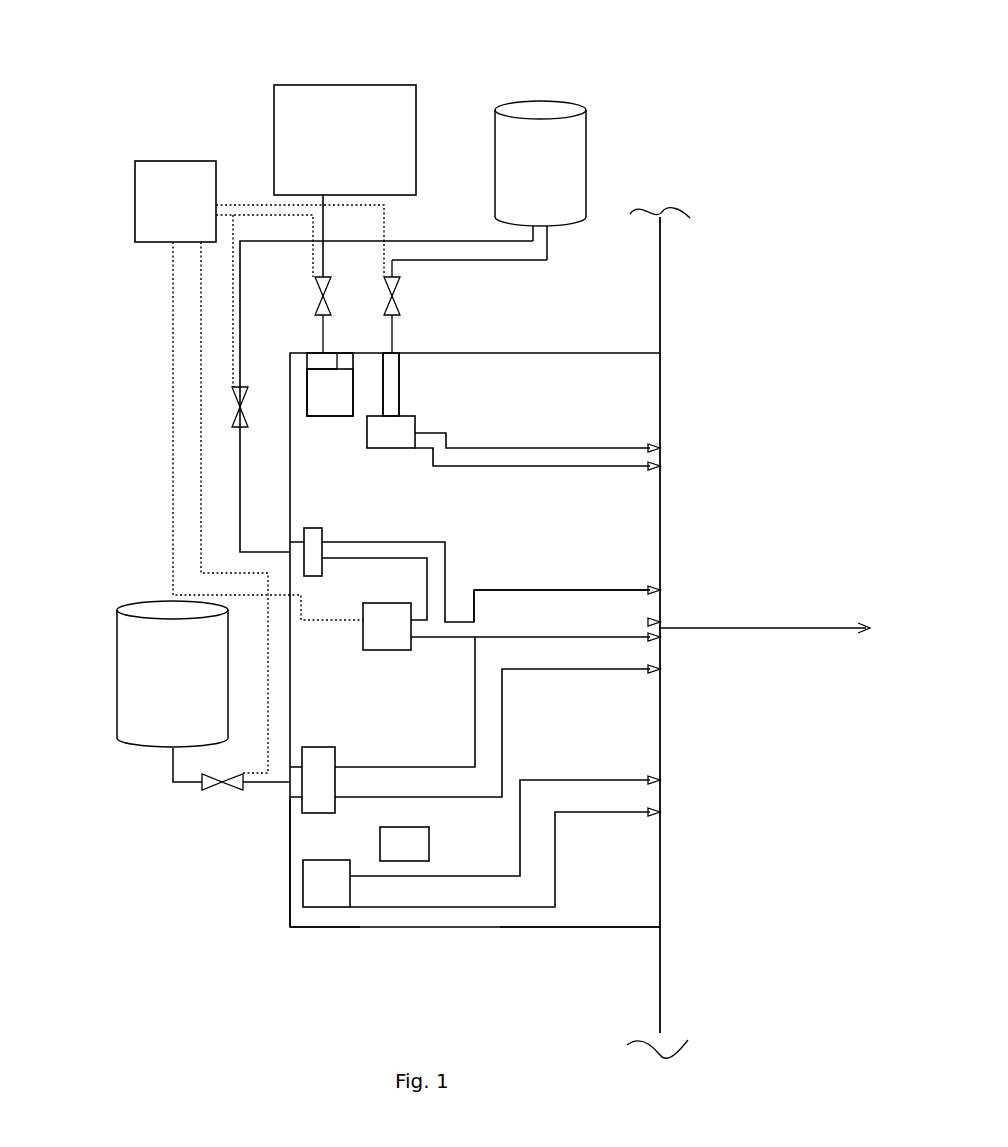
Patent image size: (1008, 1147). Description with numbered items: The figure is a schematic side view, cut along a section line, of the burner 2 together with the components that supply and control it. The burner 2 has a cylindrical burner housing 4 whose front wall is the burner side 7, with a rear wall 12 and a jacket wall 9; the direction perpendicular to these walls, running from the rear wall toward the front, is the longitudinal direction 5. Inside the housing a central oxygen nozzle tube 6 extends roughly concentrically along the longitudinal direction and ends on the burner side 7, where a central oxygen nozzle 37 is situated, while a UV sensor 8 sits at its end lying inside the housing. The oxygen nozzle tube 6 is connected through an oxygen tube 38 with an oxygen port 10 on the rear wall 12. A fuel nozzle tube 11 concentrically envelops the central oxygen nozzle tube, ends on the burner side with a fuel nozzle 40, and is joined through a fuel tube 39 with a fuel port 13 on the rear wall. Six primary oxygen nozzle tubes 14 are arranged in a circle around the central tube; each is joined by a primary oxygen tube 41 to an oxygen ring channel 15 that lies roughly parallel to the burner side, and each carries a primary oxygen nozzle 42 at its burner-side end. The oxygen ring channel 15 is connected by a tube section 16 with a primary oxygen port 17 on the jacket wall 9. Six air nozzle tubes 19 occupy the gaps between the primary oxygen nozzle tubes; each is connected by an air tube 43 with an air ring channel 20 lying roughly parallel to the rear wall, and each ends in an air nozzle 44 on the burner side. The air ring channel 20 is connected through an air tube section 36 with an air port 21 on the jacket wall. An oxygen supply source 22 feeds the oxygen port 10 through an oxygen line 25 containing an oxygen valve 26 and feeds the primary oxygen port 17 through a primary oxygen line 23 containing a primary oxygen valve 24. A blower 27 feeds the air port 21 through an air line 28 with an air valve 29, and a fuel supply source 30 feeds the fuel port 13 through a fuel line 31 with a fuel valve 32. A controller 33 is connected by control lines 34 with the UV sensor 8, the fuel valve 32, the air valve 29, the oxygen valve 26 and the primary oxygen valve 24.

The burner 2 is at (570, 332).
The burner housing 4 is at (390, 929).
The longitudinal direction 5 is at (773, 628).
The central oxygen nozzle tube 6 is at (560, 618).
The burner side 7 is at (662, 287).
The UV sensor 8 is at (371, 633).
The jacket wall 9 is at (535, 929).
The oxygen port 10 is at (312, 527).
The fuel nozzle tube 11 is at (592, 672).
The rear wall 12 is at (287, 893).
The fuel port 13 is at (320, 747).
The primary oxygen nozzle tubes 14 is at (652, 440).
The oxygen ring channel 15 is at (408, 411).
The tube section 16 is at (402, 390).
The primary oxygen port 17 is at (393, 340).
The air nozzle tubes 19 is at (655, 776).
The air ring channel 20 is at (317, 393).
The air port 21 is at (310, 350).
The oxygen supply source 22 is at (578, 138).
The primary oxygen line 23 is at (548, 253).
The primary oxygen valve 24 is at (397, 300).
The oxygen line 25 is at (440, 240).
The oxygen valve 26 is at (243, 410).
The blower 27 is at (346, 85).
The air line 28 is at (324, 212).
The air valve 29 is at (327, 290).
The fuel supply source 30 is at (125, 675).
The fuel line 31 is at (192, 785).
The fuel valve 32 is at (225, 785).
The controller 33 is at (160, 161).
The control lines 34 is at (260, 215).
The air tube section 36 is at (337, 367).
The central oxygen nozzle 37 is at (662, 622).
The oxygen tube 38 is at (420, 531).
The fuel tube 39 is at (397, 767).
The fuel nozzle 40 is at (662, 665).
The primary oxygen tube 41 is at (447, 430).
The primary oxygen nozzle 42 is at (662, 465).
The air tube 43 is at (556, 853).
The air nozzles 44 is at (662, 812).